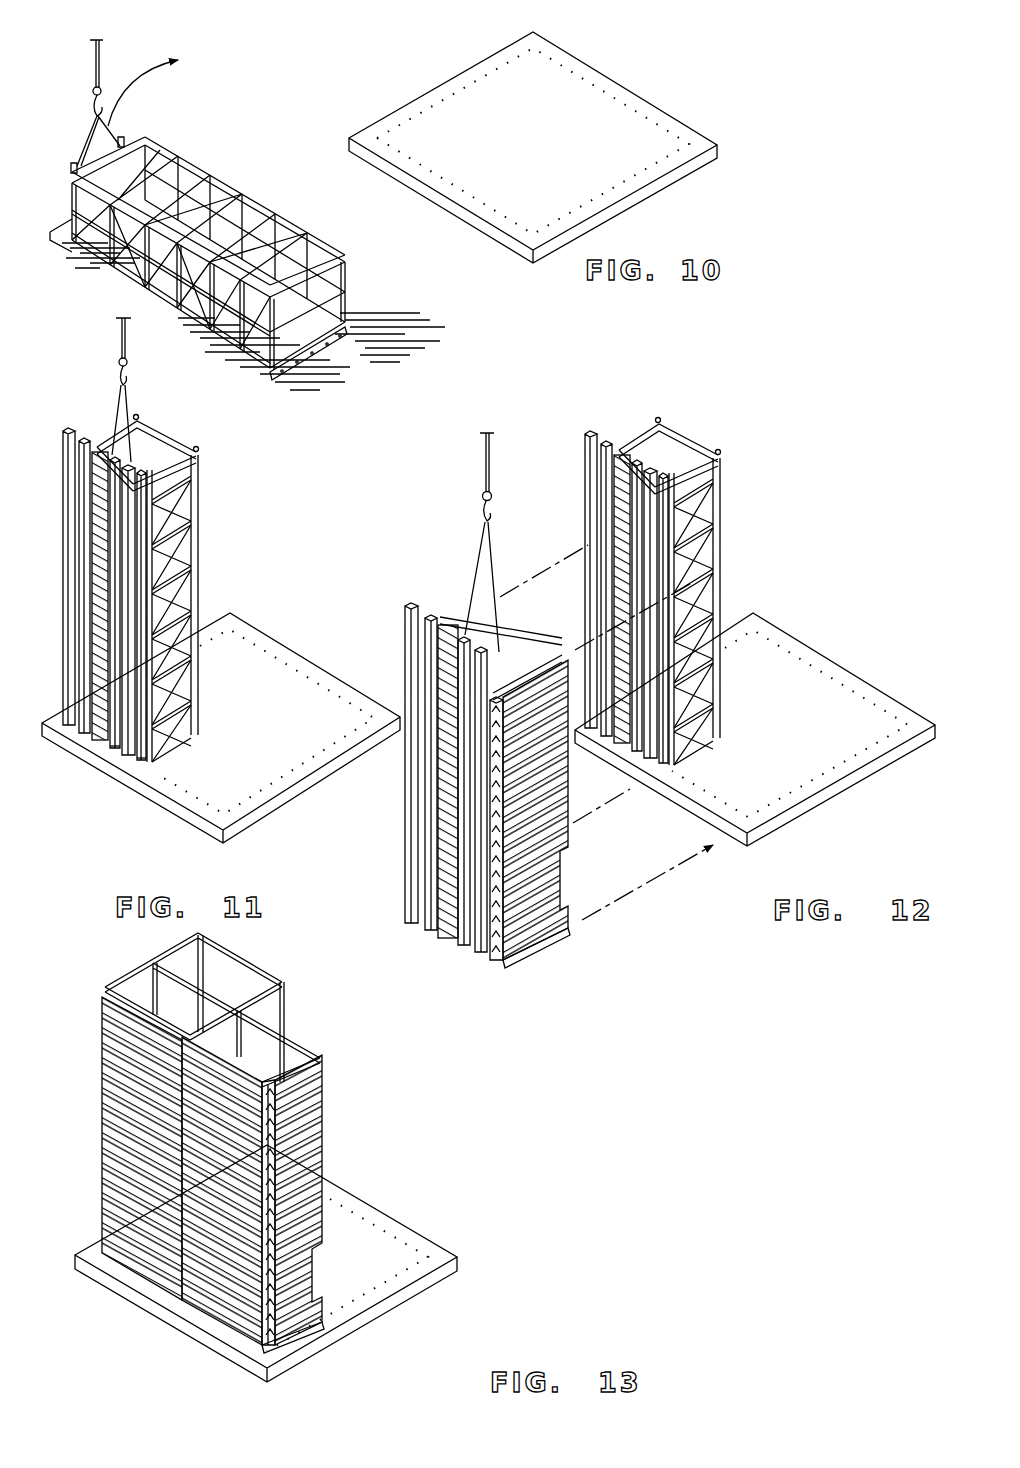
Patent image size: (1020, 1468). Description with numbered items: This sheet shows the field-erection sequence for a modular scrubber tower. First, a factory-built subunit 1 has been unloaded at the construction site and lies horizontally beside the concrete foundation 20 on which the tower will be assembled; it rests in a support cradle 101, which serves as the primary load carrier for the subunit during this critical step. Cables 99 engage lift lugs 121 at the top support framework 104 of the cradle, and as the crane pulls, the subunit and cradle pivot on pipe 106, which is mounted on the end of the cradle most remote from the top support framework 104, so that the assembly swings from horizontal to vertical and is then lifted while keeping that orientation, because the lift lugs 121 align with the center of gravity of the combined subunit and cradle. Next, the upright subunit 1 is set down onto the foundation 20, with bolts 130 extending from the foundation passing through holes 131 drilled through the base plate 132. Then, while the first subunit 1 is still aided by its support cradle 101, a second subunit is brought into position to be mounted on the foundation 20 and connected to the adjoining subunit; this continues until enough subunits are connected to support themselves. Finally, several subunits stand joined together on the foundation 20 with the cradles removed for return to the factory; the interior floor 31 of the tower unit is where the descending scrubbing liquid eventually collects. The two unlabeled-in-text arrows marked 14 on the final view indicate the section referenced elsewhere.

In FIG. 10, the subunit 1 is at (195, 162).
In FIG. 10, the concrete foundation 20 is at (547, 150).
In FIG. 11, the concrete foundation 20 is at (265, 736).
In FIG. 12, the concrete foundation 20 is at (793, 730).
In FIG. 13, the concrete foundation 20 is at (266, 1263).
In FIG. 10, the floor 31 is at (319, 298).
In FIG. 10, the cables 99 is at (83, 146).
In FIG. 11, the cables 99 is at (137, 404).
In FIG. 12, the cables 99 is at (482, 542).
In FIG. 10, the support cradle 101 is at (62, 248).
In FIG. 11, the support cradle 101 is at (66, 726).
In FIG. 12, the support cradle 101 is at (406, 805).
In FIG. 10, the top support framework 104 is at (70, 166).
In FIG. 11, the top support framework 104 is at (205, 478).
In FIG. 10, the pipe 106 is at (338, 337).
In FIG. 11, the lift lugs 121 is at (163, 438).
In FIG. 12, the lift lugs 121 is at (503, 636).
In FIG. 11, the bolts 130 is at (238, 797).
In FIG. 11, the holes 131 is at (131, 762).
In FIG. 11, the base plate 132 is at (97, 740).
In FIG. 13, the stacked panels 14 is at (157, 1073).